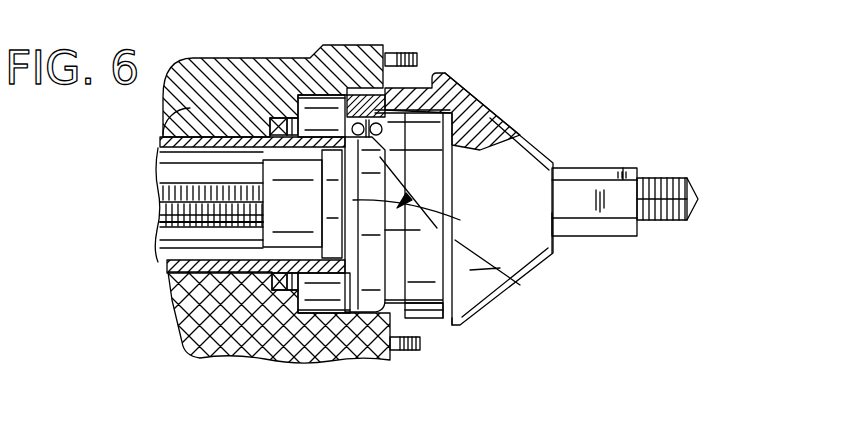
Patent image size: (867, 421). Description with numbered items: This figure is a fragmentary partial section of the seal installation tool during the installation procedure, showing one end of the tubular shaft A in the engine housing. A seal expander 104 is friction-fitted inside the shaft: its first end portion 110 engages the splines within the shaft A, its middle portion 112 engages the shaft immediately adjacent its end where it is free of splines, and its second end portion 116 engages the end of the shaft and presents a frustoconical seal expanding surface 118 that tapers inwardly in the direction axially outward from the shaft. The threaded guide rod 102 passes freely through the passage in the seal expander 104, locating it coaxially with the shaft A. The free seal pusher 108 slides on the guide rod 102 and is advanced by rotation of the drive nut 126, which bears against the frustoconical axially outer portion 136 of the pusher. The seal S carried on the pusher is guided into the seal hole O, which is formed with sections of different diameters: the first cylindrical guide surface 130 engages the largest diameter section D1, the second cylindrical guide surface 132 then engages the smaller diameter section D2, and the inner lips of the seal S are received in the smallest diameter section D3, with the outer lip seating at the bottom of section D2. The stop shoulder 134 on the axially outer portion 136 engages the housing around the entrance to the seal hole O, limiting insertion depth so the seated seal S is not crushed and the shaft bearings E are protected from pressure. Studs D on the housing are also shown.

The threaded guide rod 102 is at (215, 182).
The seal expander 104 is at (313, 298).
The free seal pusher 108 is at (502, 103).
The first end portion 110 is at (282, 192).
The middle portion 112 is at (328, 198).
The second end portion 116 is at (473, 252).
The seal expanding surface 118 is at (413, 217).
The drive nut 126 is at (605, 168).
The first cylindrical guide surface 130 is at (397, 280).
The second cylindrical guide surface 132 is at (437, 258).
The stop shoulder 134 is at (432, 78).
The axially outer portion 136 is at (520, 148).
The shaft A is at (165, 113).
The stud D is at (431, 26).
The largest diameter section D1 is at (357, 323).
The smaller diameter section D2 is at (305, 120).
The smallest diameter section D3 is at (268, 130).
The shaft bearing E is at (262, 128).
The seal hole O is at (347, 298).
The seal S is at (280, 360).